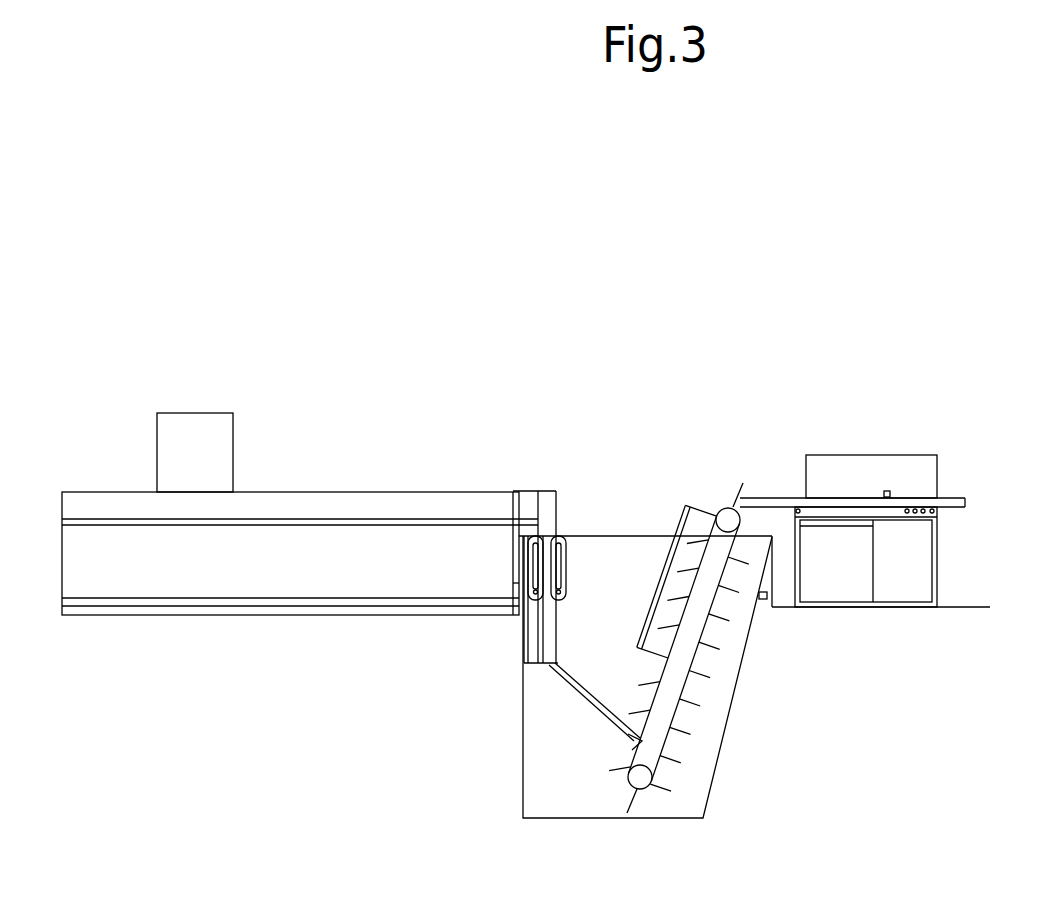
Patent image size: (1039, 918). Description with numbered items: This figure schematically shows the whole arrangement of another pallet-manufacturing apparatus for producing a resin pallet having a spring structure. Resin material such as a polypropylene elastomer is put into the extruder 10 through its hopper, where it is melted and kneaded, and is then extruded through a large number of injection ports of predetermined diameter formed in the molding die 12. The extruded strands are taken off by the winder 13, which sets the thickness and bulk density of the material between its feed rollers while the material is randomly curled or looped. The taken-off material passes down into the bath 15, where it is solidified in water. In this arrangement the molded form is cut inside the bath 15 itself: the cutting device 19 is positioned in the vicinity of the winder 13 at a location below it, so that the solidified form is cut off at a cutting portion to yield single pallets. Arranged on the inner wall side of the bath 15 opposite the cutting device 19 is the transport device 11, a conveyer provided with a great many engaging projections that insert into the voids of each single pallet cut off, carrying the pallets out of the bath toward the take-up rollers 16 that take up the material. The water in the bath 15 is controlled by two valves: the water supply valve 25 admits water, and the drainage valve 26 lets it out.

The extruder 10 is at (441, 496).
The transport device 11 is at (721, 727).
The molding die 12 is at (552, 491).
The winder 13 is at (522, 614).
The bath 15 is at (552, 765).
The take-up rollers 16 is at (887, 491).
The cutting device 19 is at (536, 666).
The water supply valve 25 is at (514, 596).
The drainage valve 26 is at (777, 610).